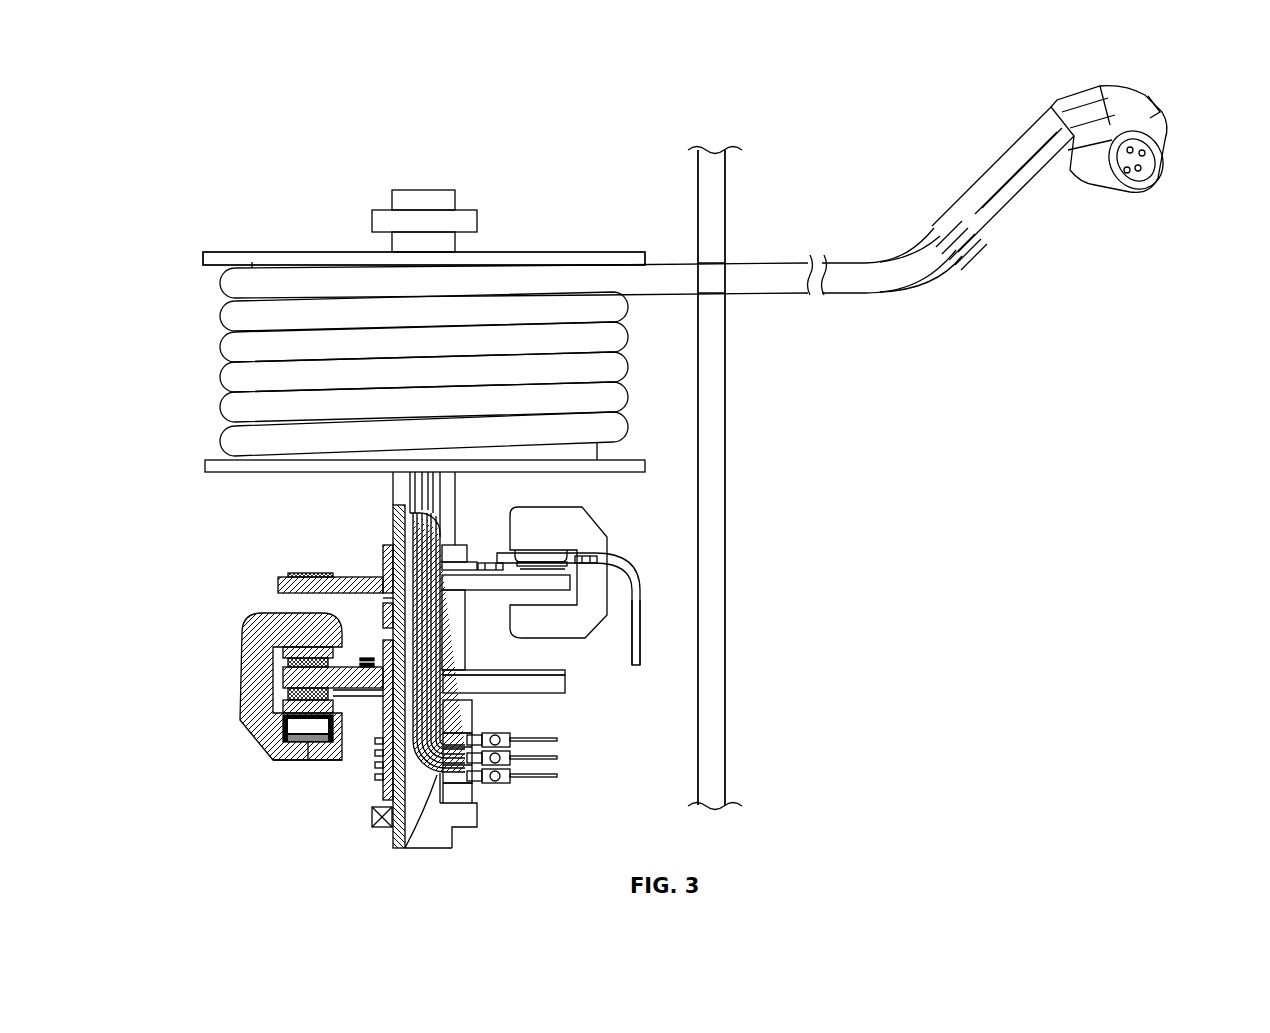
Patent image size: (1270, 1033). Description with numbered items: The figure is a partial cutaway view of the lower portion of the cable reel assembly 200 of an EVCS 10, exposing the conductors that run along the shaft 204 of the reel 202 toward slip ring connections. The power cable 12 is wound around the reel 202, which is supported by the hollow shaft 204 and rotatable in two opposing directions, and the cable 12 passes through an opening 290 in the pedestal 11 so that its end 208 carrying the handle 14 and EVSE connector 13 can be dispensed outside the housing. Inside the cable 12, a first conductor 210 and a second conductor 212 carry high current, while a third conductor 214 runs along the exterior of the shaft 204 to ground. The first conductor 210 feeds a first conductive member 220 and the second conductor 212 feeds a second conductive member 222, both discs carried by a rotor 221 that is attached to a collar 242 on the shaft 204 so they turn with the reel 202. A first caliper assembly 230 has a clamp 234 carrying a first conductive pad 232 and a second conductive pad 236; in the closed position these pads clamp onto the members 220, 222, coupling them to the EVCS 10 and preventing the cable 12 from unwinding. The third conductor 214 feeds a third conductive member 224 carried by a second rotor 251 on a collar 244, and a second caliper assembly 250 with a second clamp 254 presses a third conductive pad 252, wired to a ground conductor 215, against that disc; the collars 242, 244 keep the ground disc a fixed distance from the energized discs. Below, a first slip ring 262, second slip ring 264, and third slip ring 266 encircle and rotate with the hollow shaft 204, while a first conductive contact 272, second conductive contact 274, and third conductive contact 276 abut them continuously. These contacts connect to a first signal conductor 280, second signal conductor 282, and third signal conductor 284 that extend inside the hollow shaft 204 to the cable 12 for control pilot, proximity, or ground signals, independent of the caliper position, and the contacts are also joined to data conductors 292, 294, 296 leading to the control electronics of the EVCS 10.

The EVCS 10 is at (777, 110).
The pedestal 11 is at (727, 635).
The power cable 12 is at (333, 277).
The EVSE connector 13 is at (1170, 165).
The handle 14 is at (1130, 88).
The cable reel assembly 200 is at (278, 128).
The reel 202 is at (555, 255).
The shaft 204 is at (433, 198).
The end of the cable 208 is at (937, 277).
The first conductor 210 is at (412, 482).
The second conductor 212 is at (422, 503).
The third conductor 214 is at (438, 483).
The ground conductor 215 is at (637, 627).
The first conductive member 220 is at (337, 667).
The rotor 221 is at (283, 675).
The second conductive member 222 is at (287, 698).
The third conductive member 224 is at (300, 573).
The first caliper assembly 230 is at (238, 633).
The first conductive pad 232 is at (287, 662).
The clamp 234 is at (262, 742).
The second conductive pad 236 is at (287, 690).
The collar 242 is at (388, 717).
The collar 244 is at (383, 605).
The second caliper assembly 250 is at (597, 518).
The second rotor 251 is at (278, 576).
The third conductive pad 252 is at (558, 570).
The second clamp 254 is at (552, 517).
The first slip ring 262 is at (458, 742).
The second slip ring 264 is at (458, 758).
The third slip ring 266 is at (450, 777).
The first conductive contact 272 is at (478, 742).
The second conductive contact 274 is at (478, 783).
The third conductive contact 276 is at (472, 777).
The first signal conductor 280 is at (443, 628).
The second signal conductor 282 is at (413, 767).
The third signal conductor 284 is at (430, 777).
The opening 290 is at (733, 257).
The data conductor 292 is at (557, 743).
The data conductor 294 is at (557, 758).
The data conductor 296 is at (557, 775).